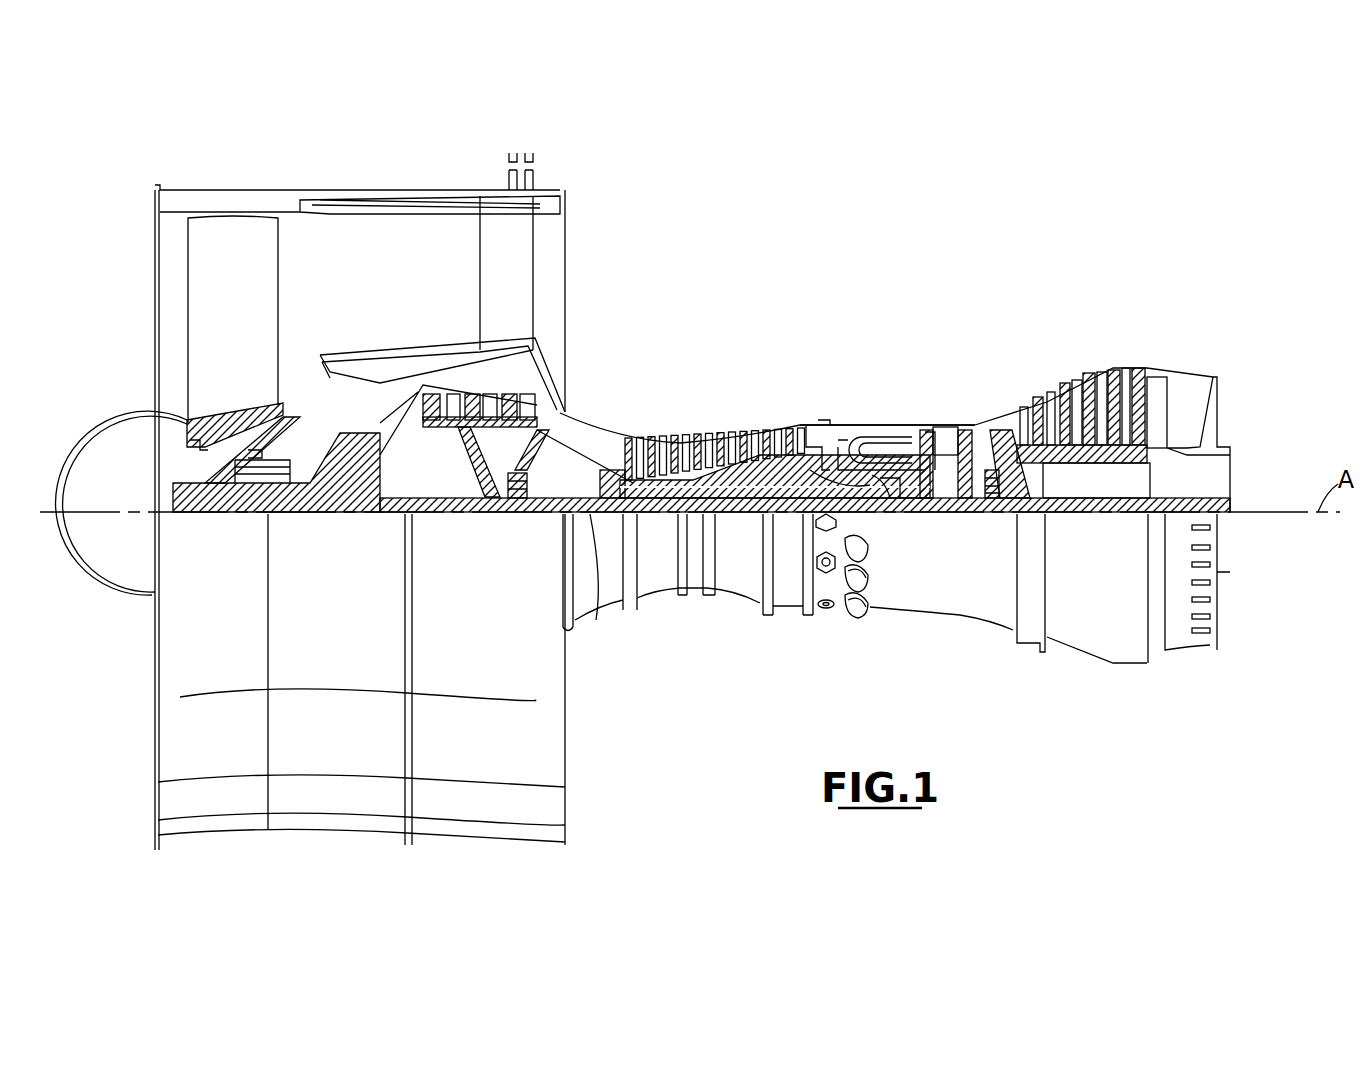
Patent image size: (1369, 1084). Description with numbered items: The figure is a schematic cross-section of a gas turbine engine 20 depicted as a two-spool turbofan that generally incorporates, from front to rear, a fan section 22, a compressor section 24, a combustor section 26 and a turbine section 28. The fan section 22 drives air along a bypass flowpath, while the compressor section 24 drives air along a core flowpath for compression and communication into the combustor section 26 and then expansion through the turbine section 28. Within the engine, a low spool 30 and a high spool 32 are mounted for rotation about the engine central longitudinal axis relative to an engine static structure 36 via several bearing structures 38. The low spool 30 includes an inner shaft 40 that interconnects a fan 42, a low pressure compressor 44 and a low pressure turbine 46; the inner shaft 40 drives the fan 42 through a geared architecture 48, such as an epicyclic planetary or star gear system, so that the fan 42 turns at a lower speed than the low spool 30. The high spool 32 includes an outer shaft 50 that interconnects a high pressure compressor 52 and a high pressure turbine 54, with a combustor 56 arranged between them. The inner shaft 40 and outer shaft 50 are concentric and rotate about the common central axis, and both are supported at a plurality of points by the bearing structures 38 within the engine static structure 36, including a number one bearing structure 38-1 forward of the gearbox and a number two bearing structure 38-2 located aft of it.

The gas turbine engine 20 is at (896, 235).
The fan section 22 is at (278, 176).
The compressor section 24 is at (619, 403).
The combustor section 26 is at (872, 394).
The turbine section 28 is at (1041, 349).
The low spool 30 is at (740, 522).
The high spool 32 is at (785, 475).
The engine static structure 36 is at (786, 614).
The bearing structures 38 is at (1012, 470).
The #1 bearing structure 38-1 is at (258, 478).
The #2 bearing structure 38-2 is at (520, 500).
The inner shaft 40 is at (595, 615).
The fan 42 is at (216, 337).
The low pressure compressor 44 is at (490, 400).
The low pressure turbine 46 is at (1090, 388).
The geared architecture 48 is at (368, 492).
The outer shaft 50 is at (882, 492).
The high pressure compressor 52 is at (713, 475).
The high pressure turbine 54 is at (950, 427).
The combustor 56 is at (873, 447).